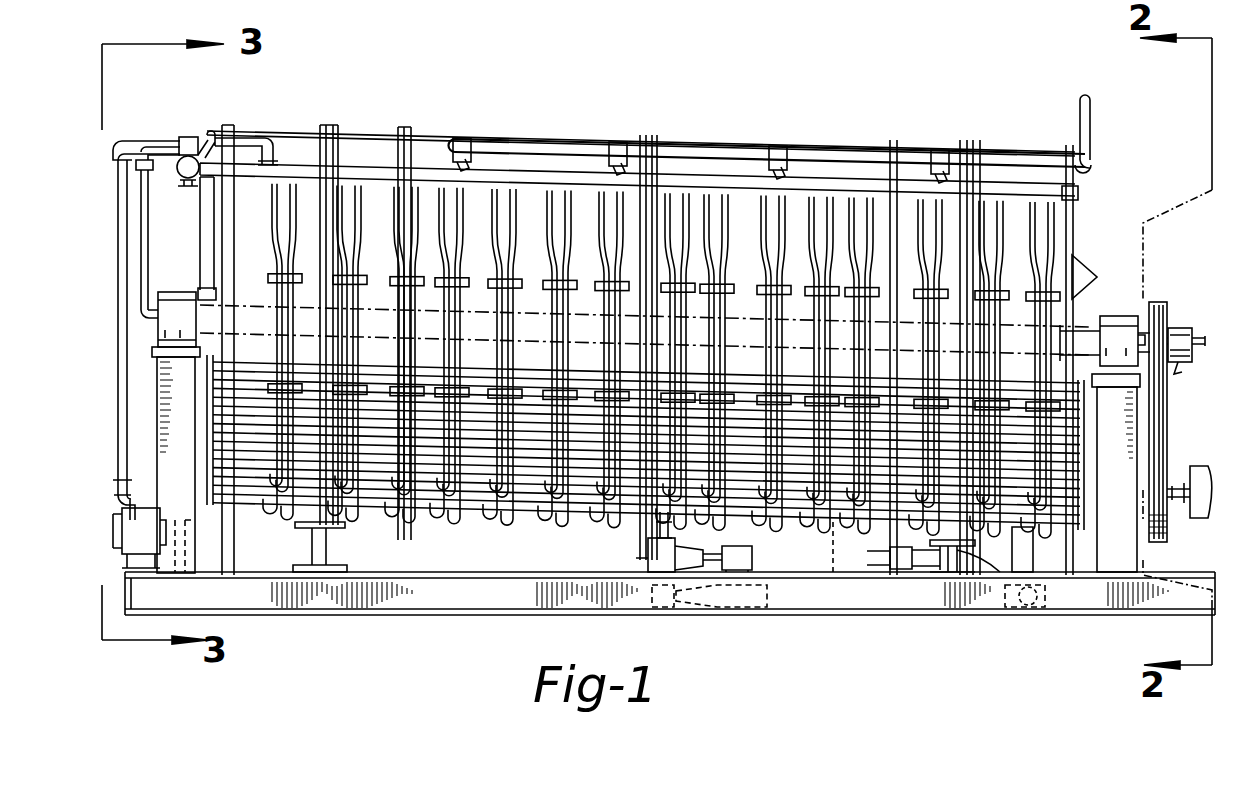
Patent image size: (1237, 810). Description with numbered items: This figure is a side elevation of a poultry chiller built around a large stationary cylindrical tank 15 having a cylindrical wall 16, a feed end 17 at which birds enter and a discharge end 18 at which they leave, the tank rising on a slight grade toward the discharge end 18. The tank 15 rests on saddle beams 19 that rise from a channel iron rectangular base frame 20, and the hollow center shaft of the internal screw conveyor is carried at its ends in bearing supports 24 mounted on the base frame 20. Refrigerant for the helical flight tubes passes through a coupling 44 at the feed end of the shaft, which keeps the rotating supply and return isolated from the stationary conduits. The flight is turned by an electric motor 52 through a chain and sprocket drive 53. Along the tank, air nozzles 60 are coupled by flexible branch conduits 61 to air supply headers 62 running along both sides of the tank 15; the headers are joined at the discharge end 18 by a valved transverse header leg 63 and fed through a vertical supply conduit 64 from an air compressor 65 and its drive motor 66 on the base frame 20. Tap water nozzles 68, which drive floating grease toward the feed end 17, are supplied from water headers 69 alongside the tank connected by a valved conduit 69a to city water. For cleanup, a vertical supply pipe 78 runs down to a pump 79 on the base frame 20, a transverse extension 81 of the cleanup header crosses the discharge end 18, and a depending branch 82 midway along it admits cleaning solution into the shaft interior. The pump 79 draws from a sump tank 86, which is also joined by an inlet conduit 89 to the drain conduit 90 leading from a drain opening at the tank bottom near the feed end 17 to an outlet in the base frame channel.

The cylindrical tank 15 is at (402, 118).
The cylindrical wall 16 is at (360, 144).
The feed end 17 is at (1083, 182).
The discharge end 18 is at (207, 108).
The saddle beams 19 is at (332, 544).
The base frame 20 is at (430, 612).
The bearing supports 24 is at (1118, 320).
The coupling 44 is at (1182, 330).
The electric motor 52 is at (1204, 468).
The chain and sprocket drive 53 is at (1167, 423).
The air nozzles 60 is at (606, 500).
The branch conduits 61 is at (510, 388).
The air supply headers 62 is at (532, 175).
The transverse header leg 63 is at (192, 137).
The vertical supply conduit 64 is at (115, 367).
The air compressor 65 is at (120, 530).
The drive motor 66 is at (196, 545).
The tap water nozzles 68 is at (470, 148).
The water headers 69 is at (718, 155).
The valved conduit 69a is at (1079, 124).
The vertical supply pipe 78 is at (668, 536).
The pump 79 is at (645, 553).
The transverse extension 81 is at (215, 133).
The depending branch 82 is at (155, 240).
The sump tank 86 is at (822, 558).
The inlet conduit 89 is at (940, 566).
The drain conduit 90 is at (1035, 560).